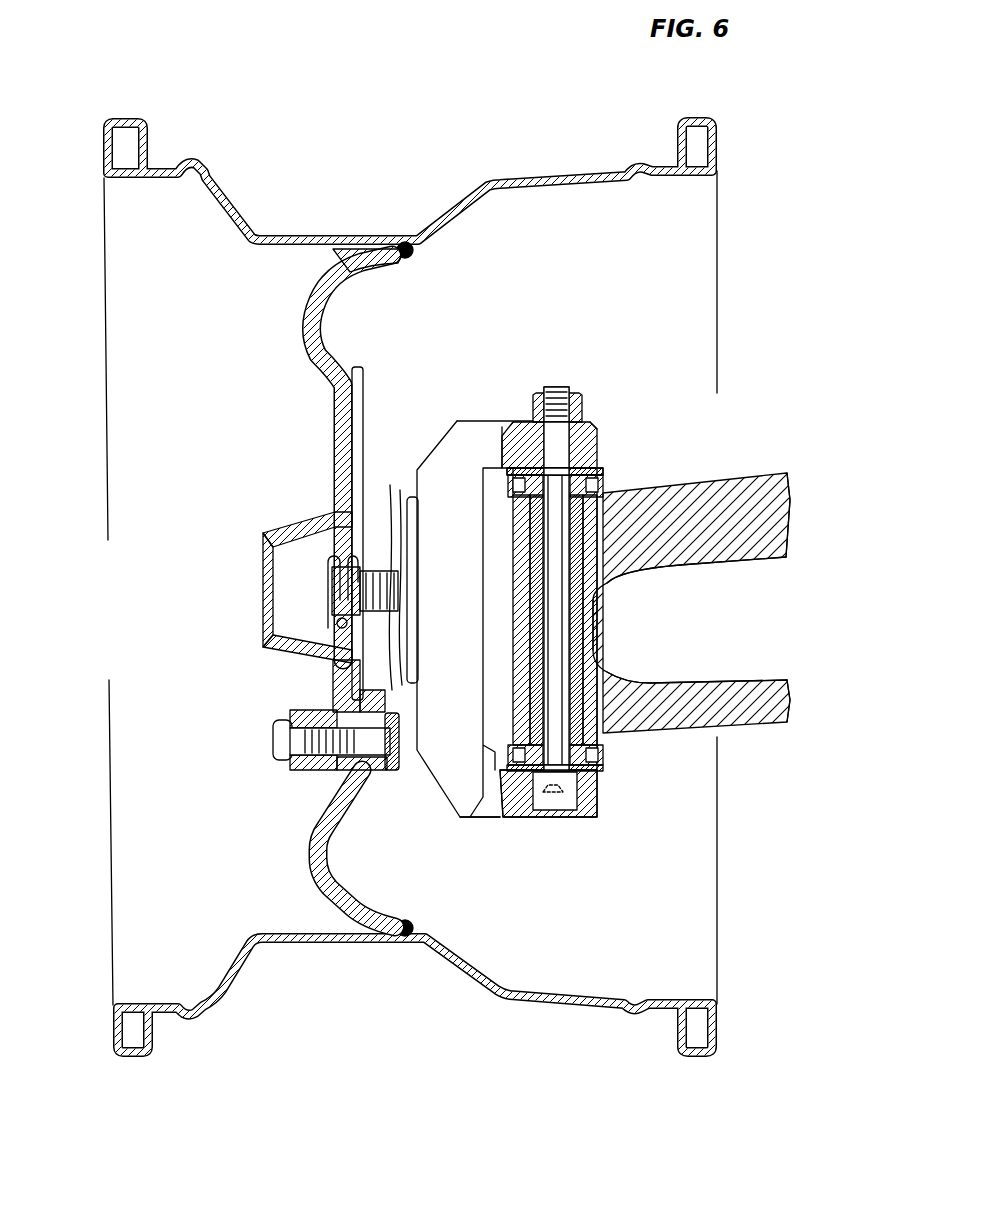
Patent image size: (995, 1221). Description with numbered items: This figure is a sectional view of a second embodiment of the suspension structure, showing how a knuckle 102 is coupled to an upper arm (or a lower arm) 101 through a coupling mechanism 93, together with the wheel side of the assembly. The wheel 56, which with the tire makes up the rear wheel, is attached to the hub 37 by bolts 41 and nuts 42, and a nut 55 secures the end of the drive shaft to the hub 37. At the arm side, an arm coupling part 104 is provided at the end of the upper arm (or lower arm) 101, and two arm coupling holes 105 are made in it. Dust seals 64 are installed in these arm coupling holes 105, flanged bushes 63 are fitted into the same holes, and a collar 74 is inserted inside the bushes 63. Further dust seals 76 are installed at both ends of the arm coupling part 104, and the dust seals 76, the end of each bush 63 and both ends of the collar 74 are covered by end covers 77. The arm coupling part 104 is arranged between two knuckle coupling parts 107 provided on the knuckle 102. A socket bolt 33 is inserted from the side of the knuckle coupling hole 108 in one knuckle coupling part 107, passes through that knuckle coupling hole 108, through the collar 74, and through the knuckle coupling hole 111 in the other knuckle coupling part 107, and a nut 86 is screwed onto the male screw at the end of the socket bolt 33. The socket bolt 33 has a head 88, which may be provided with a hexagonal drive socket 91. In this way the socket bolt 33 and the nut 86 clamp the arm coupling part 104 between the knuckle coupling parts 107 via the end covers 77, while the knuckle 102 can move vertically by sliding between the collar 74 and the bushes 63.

The wheel 56 is at (495, 172).
The hub 37 is at (334, 430).
The nut 55 is at (343, 543).
The nut 42 is at (320, 722).
The bolt 41 is at (400, 773).
The knuckle 102 is at (430, 438).
The end cover 77 is at (470, 420).
The arm coupling part 104 is at (518, 607).
The arm coupling hole 105 is at (530, 515).
The socket bolt 33 is at (545, 583).
The nut 86 is at (570, 405).
The knuckle coupling hole 111 is at (597, 427).
The knuckle coupling part 107 is at (513, 421).
The coupling mechanism 93 is at (615, 445).
The dust seal 76 is at (605, 465).
The flanged bush 63 is at (618, 488).
The dust seal 64 is at (598, 560).
The collar 74 is at (596, 630).
The upper arm (or lower arm) 101 is at (777, 470).
The head 88 is at (597, 793).
The knuckle coupling hole 108 is at (565, 812).
The hexagonal drive socket 91 is at (553, 795).